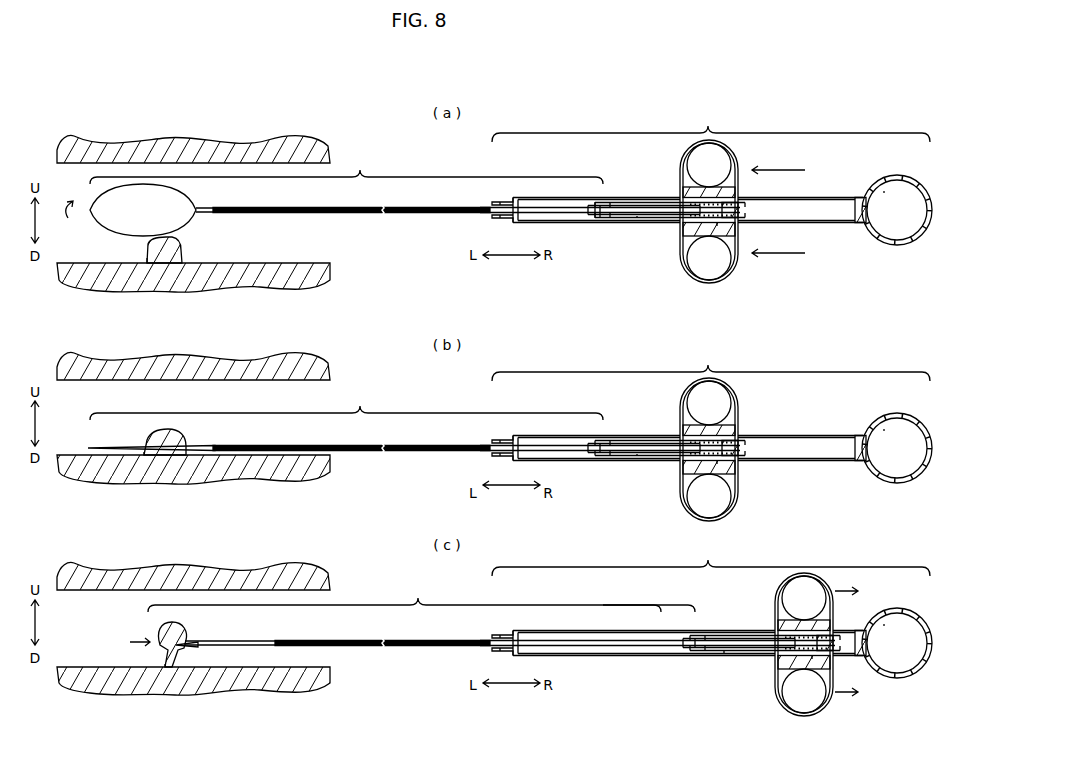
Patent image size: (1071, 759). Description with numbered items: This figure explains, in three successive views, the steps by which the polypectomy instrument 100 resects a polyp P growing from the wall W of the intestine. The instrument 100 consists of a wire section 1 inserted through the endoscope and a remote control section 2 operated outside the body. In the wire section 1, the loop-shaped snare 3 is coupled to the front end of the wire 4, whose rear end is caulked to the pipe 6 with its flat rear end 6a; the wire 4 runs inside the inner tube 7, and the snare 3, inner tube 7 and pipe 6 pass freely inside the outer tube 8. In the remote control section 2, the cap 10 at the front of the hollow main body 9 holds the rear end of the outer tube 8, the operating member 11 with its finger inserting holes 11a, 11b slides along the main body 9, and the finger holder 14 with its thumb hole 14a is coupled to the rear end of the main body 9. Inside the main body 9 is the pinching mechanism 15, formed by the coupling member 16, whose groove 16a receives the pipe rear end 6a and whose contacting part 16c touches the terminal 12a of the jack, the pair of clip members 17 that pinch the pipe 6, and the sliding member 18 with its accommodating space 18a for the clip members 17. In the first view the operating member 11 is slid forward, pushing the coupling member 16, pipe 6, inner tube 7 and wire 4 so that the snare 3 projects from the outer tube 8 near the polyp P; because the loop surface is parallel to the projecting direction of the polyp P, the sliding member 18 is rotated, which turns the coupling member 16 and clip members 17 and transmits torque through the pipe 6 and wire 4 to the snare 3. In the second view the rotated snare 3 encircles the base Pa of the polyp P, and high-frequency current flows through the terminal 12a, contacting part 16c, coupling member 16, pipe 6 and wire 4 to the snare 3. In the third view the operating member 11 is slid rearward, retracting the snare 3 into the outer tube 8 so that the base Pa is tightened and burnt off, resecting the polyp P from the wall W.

The polypectomy instrument 100 is at (401, 353).
The wire section 1 is at (392, 381).
The remote control section 2 is at (711, 342).
The snare 3 is at (186, 206).
The outer tube 8 is at (238, 206).
The wire 4 is at (291, 206).
The inner tube 7 is at (330, 206).
The cap 10 is at (500, 202).
The pipe 6 is at (543, 200).
The rear end of pipe 6a is at (597, 205).
The clip member 17 is at (606, 204).
The sliding member 18 is at (643, 202).
The coupling member 16 is at (661, 203).
The groove 16a is at (600, 224).
The contacting part 16c is at (717, 224).
The accommodating space 18a is at (637, 224).
The terminal 12a is at (706, 203).
The pinching mechanism 15 is at (670, 374).
The operating member 11 is at (683, 161).
The finger inserting hole 11a is at (691, 160).
The finger inserting hole 11b is at (688, 266).
The main body 9 is at (778, 198).
The finger holder 14 is at (892, 177).
The finger inserting hole 14a is at (884, 191).
The wall W is at (75, 262).
The polyp P is at (150, 241).
The base of polyp Pa is at (147, 260).